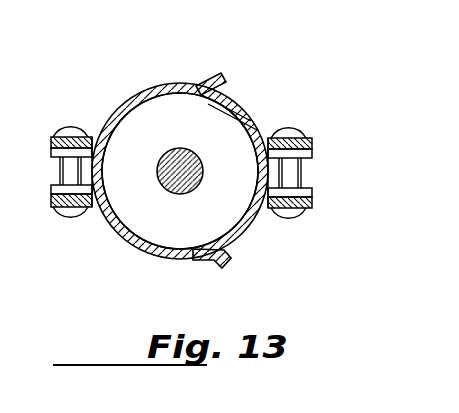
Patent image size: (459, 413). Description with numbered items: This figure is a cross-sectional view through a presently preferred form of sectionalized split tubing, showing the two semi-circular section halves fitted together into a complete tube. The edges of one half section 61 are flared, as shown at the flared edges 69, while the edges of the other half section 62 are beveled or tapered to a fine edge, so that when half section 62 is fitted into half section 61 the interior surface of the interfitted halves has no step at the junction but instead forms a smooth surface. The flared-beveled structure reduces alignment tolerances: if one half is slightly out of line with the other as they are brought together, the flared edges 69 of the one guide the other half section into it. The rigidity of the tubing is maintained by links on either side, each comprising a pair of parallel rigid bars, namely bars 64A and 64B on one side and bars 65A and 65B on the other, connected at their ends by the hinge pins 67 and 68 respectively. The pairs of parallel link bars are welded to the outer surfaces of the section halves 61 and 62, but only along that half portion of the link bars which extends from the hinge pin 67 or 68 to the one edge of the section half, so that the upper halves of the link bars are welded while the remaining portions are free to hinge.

The semi-circular half section 61 is at (140, 98).
The half section 62 is at (243, 110).
The flared edges 69 is at (220, 74).
The parallel rigid bar 64A is at (63, 135).
The parallel rigid bar 64B is at (62, 207).
The hinge pin 67 is at (62, 168).
The parallel rigid bar 65A is at (287, 136).
The parallel rigid bar 65B is at (290, 208).
The hinge pin 68 is at (288, 176).